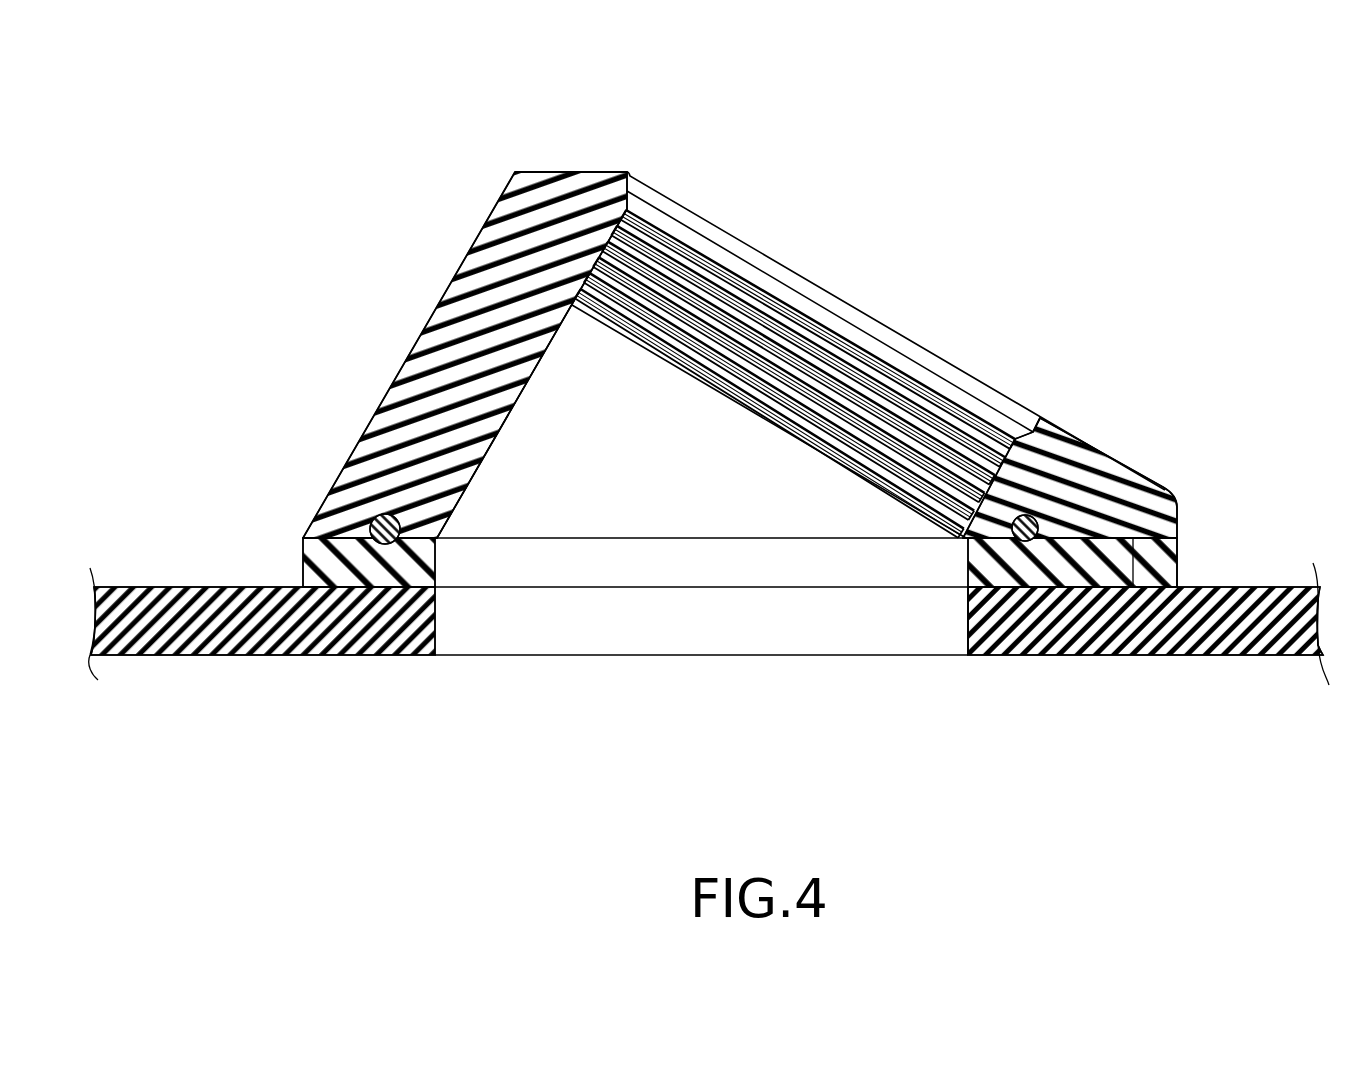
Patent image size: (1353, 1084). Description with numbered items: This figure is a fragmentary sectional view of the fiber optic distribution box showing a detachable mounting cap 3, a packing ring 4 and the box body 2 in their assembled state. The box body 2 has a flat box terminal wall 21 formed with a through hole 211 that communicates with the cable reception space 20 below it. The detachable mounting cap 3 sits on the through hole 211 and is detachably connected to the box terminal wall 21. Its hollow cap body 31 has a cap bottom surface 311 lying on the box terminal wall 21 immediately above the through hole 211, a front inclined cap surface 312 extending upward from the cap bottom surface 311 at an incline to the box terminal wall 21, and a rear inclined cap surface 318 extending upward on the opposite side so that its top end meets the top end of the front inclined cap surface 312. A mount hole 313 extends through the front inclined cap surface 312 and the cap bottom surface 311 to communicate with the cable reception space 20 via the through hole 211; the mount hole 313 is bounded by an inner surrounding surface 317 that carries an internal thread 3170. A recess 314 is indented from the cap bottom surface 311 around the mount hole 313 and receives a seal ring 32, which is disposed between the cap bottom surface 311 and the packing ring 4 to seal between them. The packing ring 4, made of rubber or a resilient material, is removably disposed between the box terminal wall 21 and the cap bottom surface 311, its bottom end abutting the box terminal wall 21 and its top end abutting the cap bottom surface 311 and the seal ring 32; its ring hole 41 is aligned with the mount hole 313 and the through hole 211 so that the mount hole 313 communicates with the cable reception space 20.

The box body 2 is at (712, 615).
The cable reception space 20 is at (632, 676).
The box terminal wall 21 is at (1210, 583).
The through holes 211 is at (968, 618).
The detachable mounting cap 3 is at (741, 413).
The hollow cap body 31 is at (465, 330).
The cap bottom surface 311 is at (1137, 583).
The front inclined cap surface 312 is at (1081, 540).
The mount hole 313 is at (785, 277).
The recess 314 is at (1022, 546).
The inner surrounding surface 317 is at (535, 370).
The internal thread 3170 is at (655, 232).
The rear inclined cap surface 318 is at (495, 207).
The seal ring 32 is at (374, 517).
The packing ring 4 is at (371, 602).
The ring hole 41 is at (435, 562).